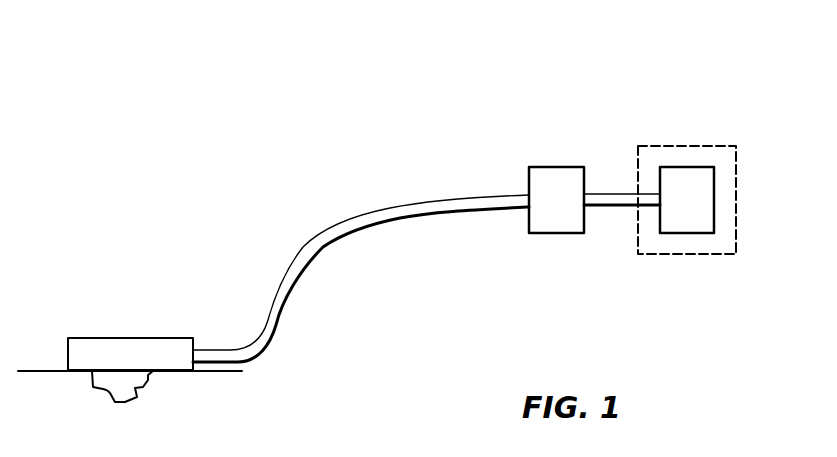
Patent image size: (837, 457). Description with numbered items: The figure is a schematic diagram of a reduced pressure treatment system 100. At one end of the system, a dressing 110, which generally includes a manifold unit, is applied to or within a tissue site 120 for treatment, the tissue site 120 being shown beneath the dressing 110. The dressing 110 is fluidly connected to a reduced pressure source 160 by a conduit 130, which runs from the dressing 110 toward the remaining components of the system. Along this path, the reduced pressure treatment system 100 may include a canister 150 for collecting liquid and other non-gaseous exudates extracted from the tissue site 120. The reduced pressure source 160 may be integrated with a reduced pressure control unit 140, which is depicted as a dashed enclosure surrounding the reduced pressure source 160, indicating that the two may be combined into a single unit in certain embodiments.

The reduced pressure treatment system 100 is at (226, 94).
The dressing 110 is at (128, 337).
The tissue site 120 is at (122, 402).
The conduit 130 is at (337, 227).
The reduced pressure control unit 140 is at (693, 146).
The canister 150 is at (560, 167).
The reduced pressure source 160 is at (717, 201).